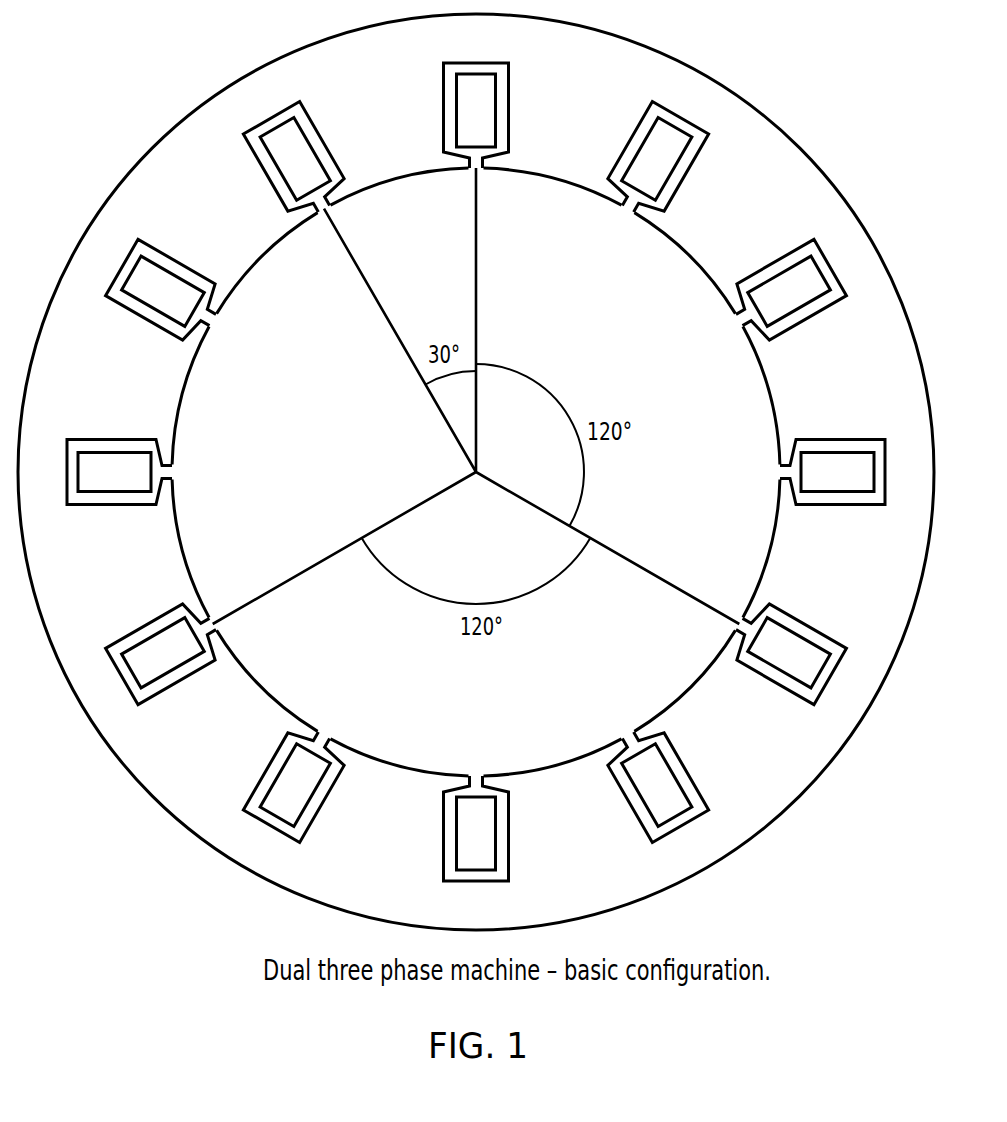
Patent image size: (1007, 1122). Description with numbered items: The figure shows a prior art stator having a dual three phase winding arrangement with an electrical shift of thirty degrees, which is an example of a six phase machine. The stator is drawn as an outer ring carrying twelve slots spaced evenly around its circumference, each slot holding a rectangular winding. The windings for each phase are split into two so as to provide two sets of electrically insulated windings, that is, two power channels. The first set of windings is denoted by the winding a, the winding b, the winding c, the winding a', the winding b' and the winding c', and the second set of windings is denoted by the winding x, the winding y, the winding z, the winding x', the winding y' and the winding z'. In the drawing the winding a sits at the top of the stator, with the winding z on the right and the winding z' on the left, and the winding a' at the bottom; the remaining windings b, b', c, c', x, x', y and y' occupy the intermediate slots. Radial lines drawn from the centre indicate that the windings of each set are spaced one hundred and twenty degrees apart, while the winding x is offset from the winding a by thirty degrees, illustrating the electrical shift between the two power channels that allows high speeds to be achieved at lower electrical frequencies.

The first set winding a is at (476, 115).
The first set winding a' is at (476, 828).
The first set winding b is at (167, 650).
The first set winding b' is at (784, 293).
The first set winding c is at (784, 650).
The first set winding c' is at (167, 293).
The second set winding x is at (297, 163).
The second set winding x' is at (654, 780).
The second set winding y is at (297, 780).
The second set winding y' is at (654, 163).
The second set winding z is at (832, 472).
The second set winding z' is at (119, 472).